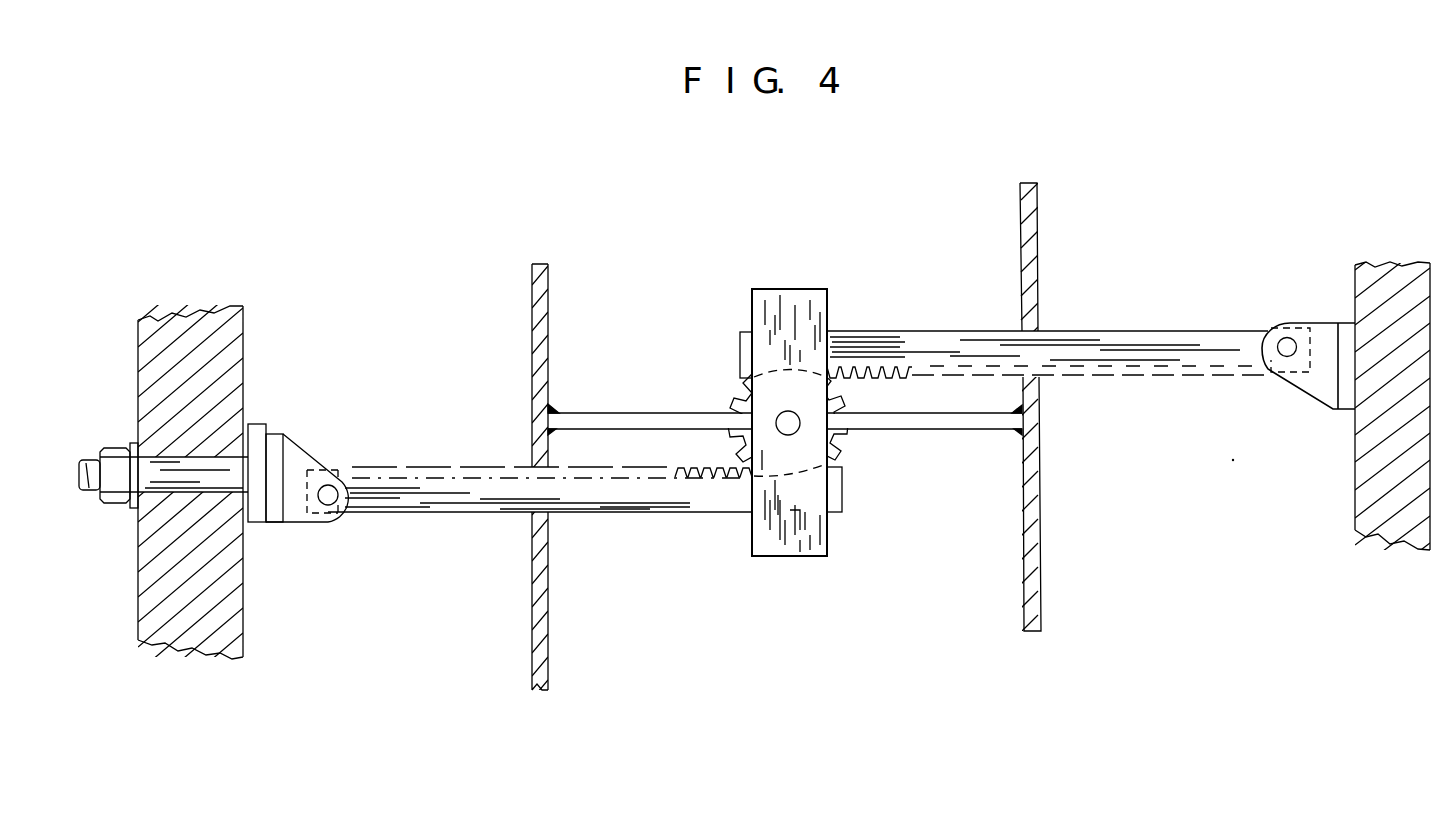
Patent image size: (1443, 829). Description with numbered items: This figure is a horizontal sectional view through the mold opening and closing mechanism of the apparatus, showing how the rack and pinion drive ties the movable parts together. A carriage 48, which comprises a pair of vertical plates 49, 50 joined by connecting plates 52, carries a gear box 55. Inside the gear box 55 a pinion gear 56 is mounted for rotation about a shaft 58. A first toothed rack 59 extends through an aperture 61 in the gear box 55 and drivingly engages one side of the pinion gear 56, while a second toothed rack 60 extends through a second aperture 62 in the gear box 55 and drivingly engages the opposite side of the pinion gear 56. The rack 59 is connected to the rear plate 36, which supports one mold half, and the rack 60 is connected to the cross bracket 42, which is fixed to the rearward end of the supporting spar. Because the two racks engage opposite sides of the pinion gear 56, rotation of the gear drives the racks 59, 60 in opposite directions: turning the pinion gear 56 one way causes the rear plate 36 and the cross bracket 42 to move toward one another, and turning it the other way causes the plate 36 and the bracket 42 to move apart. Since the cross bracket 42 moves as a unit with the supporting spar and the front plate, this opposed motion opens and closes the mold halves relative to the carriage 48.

The rear plate 36 is at (1390, 272).
The cross bracket 42 is at (225, 398).
The carriage 48 is at (509, 318).
The vertical plate 49 is at (542, 331).
The vertical plate 50 is at (1036, 228).
The connecting plates 52 is at (592, 411).
The gear box 55 is at (760, 530).
The pinion gear 56 is at (745, 402).
The shaft 58 is at (783, 427).
The first toothed rack 59 is at (1047, 339).
The second toothed rack 60 is at (561, 489).
The aperture 61 is at (803, 338).
The second aperture 62 is at (817, 513).